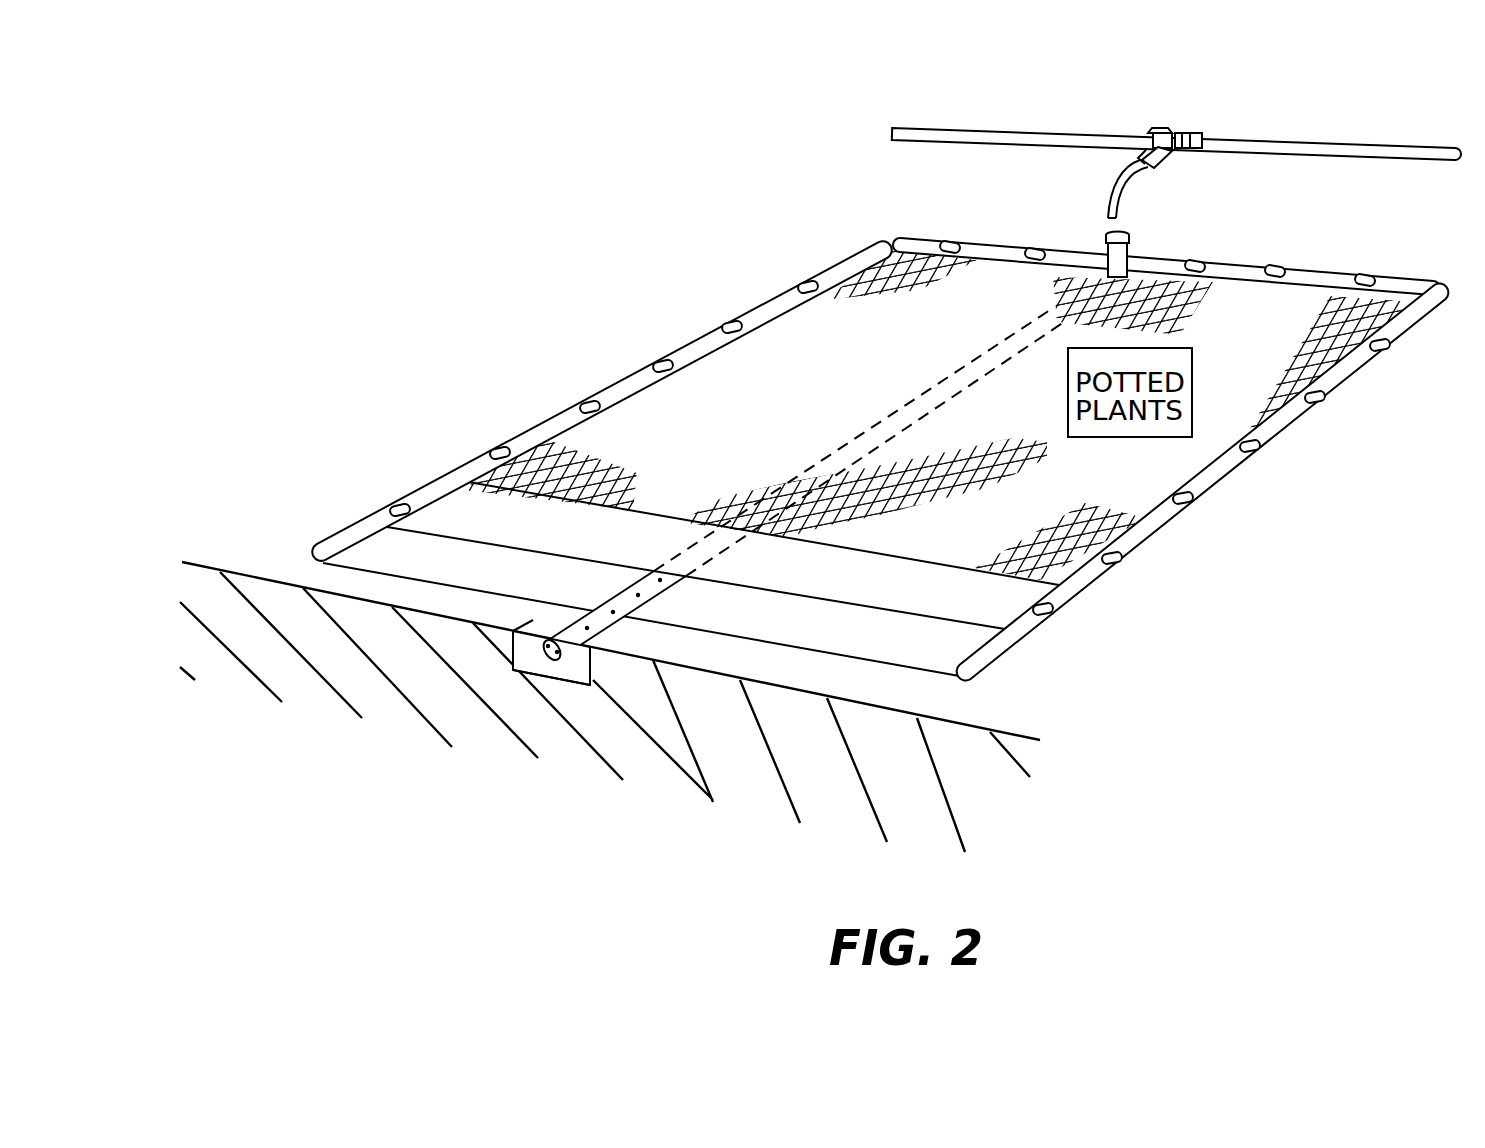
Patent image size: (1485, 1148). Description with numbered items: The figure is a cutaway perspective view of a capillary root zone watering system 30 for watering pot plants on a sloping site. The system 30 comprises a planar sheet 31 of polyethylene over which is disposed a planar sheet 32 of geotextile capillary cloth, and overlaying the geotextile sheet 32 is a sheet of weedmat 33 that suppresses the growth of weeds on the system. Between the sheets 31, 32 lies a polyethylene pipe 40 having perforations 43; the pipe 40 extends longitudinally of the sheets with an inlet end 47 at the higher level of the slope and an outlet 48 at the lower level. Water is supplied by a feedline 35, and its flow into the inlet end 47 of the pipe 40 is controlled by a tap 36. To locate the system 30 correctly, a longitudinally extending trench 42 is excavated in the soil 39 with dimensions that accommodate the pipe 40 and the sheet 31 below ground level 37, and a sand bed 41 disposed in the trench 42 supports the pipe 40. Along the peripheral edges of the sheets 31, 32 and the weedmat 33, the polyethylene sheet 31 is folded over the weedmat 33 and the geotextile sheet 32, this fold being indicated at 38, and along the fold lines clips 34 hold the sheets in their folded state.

The capillary root zone watering system 30 is at (880, 430).
The planar sheet of polyethylene 31 is at (940, 658).
The planar sheet of geotextile capillary cloth 32 is at (985, 603).
The sheet of weedmat 33 is at (1103, 518).
The clips 34 is at (390, 503).
The feedline 35 is at (1050, 131).
The tap 36 is at (1160, 128).
The ground level 37 is at (237, 562).
The fold of polyethylene sheet 38 is at (1313, 273).
The soil 39 is at (632, 738).
The polyethylene pipe 40 is at (530, 660).
The sand bed 41 is at (517, 652).
The longitudinally extending trench 42 is at (570, 687).
The perforations 43 is at (615, 645).
The inlet end 47 is at (1170, 211).
The outlet 48 is at (438, 647).